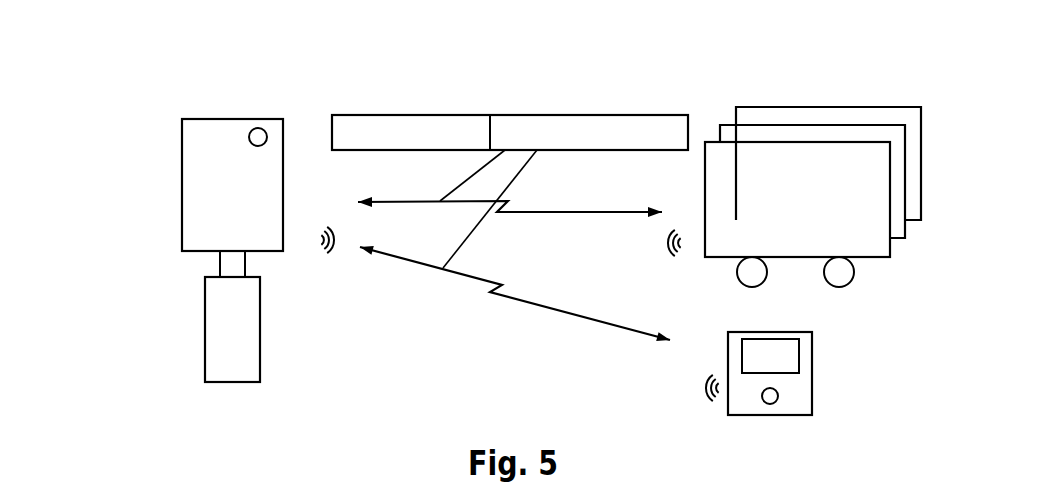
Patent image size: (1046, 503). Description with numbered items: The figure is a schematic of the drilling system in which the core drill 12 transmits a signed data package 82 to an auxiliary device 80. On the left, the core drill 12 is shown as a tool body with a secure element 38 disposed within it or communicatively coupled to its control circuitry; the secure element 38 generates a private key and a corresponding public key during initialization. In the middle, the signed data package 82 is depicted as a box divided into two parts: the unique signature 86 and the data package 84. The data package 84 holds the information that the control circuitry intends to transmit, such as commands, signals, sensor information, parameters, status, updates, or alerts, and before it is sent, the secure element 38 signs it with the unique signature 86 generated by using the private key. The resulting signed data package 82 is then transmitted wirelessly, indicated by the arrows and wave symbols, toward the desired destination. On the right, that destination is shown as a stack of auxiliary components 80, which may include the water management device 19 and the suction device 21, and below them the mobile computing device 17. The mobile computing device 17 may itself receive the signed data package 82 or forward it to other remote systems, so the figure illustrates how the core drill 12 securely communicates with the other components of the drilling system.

The core drill 12 is at (166, 126).
The secure element 38 is at (258, 128).
The signed data package 82 is at (510, 86).
The unique signature 86 is at (400, 115).
The data package 84 is at (603, 115).
The auxiliary device 80 is at (815, 154).
The water management device 19 is at (778, 107).
The suction device 21 is at (726, 126).
The mobile computing device 17 is at (828, 353).